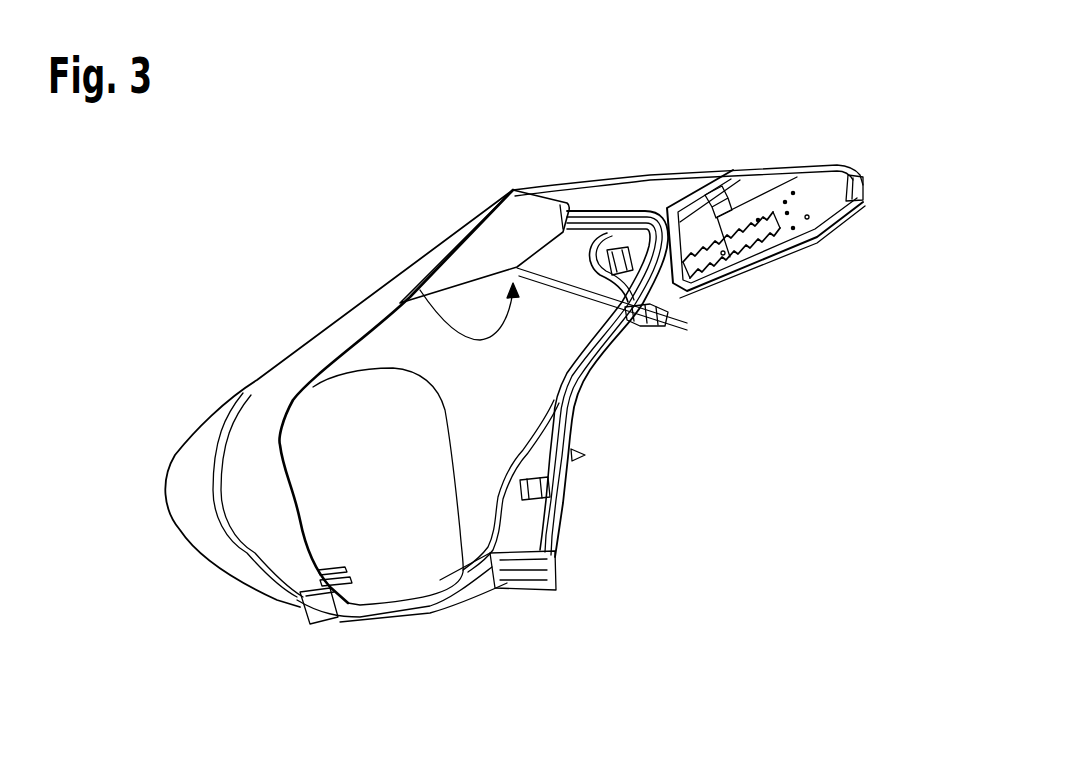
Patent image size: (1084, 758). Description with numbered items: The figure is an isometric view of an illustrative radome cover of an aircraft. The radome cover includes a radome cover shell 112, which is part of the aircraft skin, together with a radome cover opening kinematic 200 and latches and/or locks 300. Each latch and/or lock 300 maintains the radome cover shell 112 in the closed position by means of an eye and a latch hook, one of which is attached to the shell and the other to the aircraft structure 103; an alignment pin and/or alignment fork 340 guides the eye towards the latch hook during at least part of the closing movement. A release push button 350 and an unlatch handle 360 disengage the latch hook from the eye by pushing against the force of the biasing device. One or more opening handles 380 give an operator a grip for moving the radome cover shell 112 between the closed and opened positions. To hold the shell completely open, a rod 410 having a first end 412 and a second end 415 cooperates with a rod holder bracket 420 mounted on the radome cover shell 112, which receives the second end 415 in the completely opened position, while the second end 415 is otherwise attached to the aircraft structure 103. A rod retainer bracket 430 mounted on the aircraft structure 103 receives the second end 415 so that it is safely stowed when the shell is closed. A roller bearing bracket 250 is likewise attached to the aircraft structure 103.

The aircraft structure 103 is at (567, 463).
The radome cover shell 112 is at (287, 353).
The radome cover opening kinematic 200 is at (500, 257).
The roller bearing bracket 250 is at (823, 207).
The latch and/or lock 300 is at (735, 167).
The alignment pin and/or alignment fork 340 is at (557, 577).
The release push button 350 is at (300, 607).
The unlatch handle 360 is at (303, 590).
The opening handle 380 is at (360, 617).
The rod 410 is at (573, 290).
The first end 412 is at (420, 290).
The second end 415 is at (583, 287).
The rod holder bracket 420 is at (607, 233).
The rod retainer bracket 430 is at (677, 317).